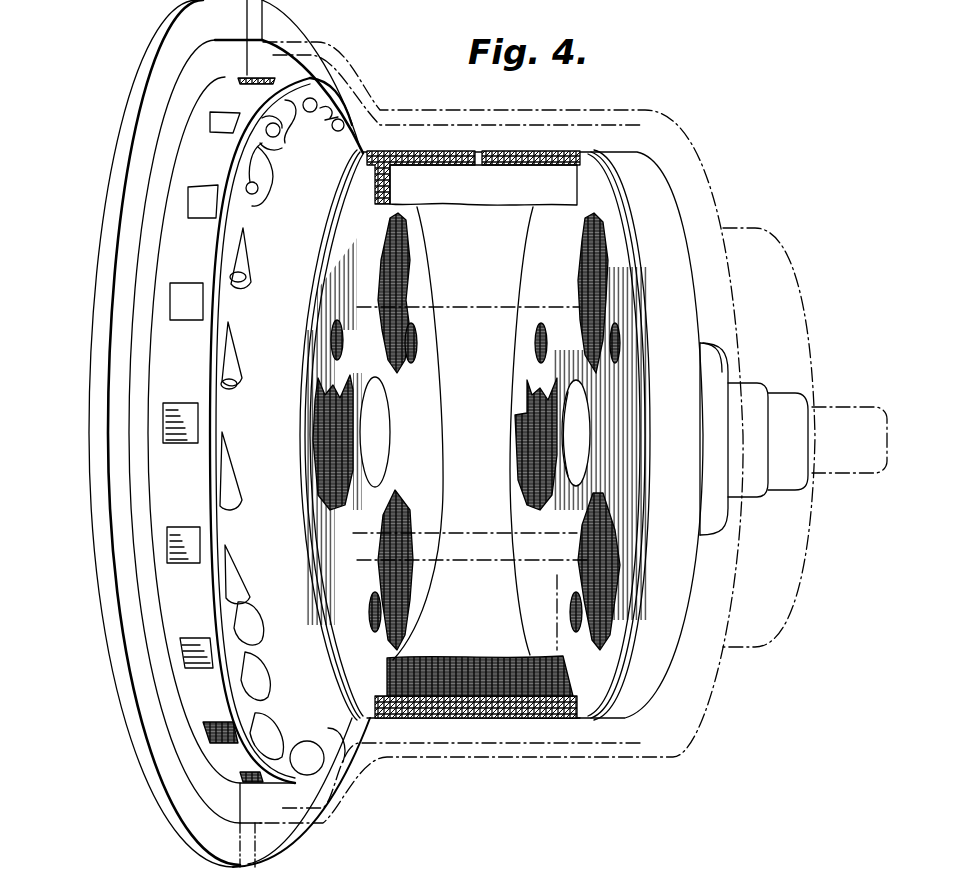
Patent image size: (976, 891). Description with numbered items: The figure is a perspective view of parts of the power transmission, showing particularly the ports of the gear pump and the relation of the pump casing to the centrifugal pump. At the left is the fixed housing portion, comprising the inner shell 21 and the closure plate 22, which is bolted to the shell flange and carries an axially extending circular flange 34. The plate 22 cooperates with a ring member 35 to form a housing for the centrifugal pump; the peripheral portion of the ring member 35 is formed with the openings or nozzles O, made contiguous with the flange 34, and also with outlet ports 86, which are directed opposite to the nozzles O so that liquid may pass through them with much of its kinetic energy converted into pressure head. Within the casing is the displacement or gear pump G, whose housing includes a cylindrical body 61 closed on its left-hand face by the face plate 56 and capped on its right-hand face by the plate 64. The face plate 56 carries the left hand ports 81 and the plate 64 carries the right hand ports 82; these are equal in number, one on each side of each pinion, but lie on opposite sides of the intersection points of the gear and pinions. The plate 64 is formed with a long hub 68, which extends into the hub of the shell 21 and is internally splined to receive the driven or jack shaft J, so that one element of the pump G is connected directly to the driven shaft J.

The inner shell 21 is at (457, 758).
The closure plate 22 is at (92, 333).
The circular flange 34 is at (160, 263).
The ring member 35 is at (204, 266).
The face plate 56 is at (433, 400).
The cylindrical body 61 is at (500, 153).
The plate 64 is at (520, 293).
The hub 68 is at (790, 486).
The left hand ports 81 is at (385, 258).
The right hand ports 82 is at (586, 268).
The outlet ports 86 is at (248, 278).
The nozzles O is at (200, 307).
The displacement pump G is at (547, 727).
The driven shaft J is at (855, 433).